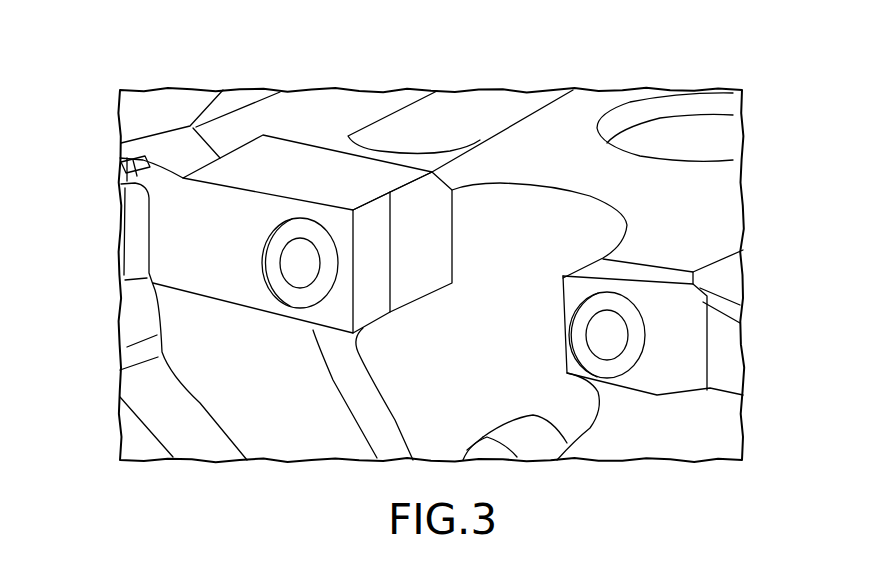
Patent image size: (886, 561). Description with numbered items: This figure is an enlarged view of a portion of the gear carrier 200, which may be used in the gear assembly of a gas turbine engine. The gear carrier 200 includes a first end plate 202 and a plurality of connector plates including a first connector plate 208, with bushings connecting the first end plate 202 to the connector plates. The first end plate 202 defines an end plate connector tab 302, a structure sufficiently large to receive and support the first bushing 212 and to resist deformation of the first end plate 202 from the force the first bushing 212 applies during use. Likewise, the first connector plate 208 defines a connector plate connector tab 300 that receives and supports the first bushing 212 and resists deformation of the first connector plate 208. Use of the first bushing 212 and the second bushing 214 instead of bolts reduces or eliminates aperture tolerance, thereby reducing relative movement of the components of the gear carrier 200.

The gear carrier 200 is at (107, 47).
The first end plate 202 is at (177, 182).
The first connector plate 208 is at (552, 128).
The first bushing 212 is at (270, 257).
The second bushing 214 is at (637, 333).
The connector plate connector tab 300 is at (316, 157).
The end plate connector tab 302 is at (235, 280).